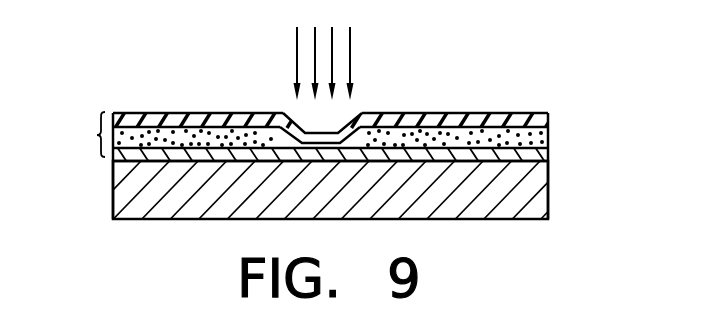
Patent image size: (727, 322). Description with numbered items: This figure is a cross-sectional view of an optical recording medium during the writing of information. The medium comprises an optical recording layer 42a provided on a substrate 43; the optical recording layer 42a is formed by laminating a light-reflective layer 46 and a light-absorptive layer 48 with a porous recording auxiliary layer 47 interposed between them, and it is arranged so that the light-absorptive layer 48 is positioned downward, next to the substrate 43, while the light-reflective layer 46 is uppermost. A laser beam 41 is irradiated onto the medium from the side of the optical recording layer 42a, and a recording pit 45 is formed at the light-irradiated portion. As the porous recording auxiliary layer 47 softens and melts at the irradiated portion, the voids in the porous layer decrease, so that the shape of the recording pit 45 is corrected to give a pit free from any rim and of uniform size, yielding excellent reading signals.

The laser beam 41 is at (350, 57).
The optical recording layer 42a is at (73, 134).
The substrate 43 is at (537, 187).
The recording pit 45 is at (326, 126).
The light-reflective layer 46 is at (542, 119).
The porous recording auxiliary layer 47 is at (542, 140).
The light-absorptive layer 48 is at (542, 157).